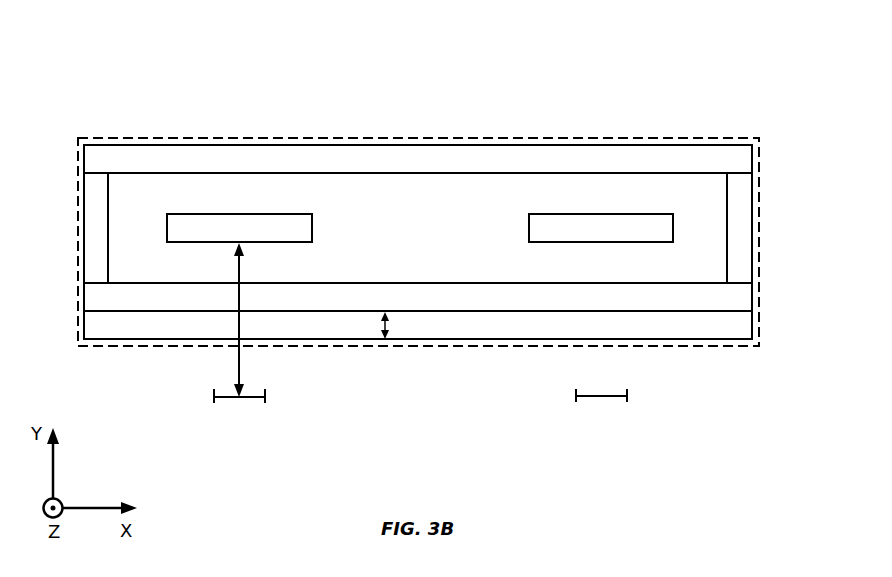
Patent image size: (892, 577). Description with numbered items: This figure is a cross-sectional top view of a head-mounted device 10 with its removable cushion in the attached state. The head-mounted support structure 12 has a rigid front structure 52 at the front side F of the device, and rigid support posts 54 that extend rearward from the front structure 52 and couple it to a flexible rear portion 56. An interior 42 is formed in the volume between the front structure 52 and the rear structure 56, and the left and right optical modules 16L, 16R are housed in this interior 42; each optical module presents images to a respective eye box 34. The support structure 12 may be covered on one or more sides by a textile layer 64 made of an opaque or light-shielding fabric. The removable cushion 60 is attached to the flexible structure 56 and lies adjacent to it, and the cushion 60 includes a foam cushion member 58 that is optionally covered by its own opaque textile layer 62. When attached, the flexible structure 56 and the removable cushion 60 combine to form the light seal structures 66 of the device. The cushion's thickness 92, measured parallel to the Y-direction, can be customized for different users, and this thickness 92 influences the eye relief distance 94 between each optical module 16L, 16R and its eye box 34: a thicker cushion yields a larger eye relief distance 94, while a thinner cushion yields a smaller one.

The head-mounted device 10 is at (97, 58).
The head-mounted support structure 12 is at (783, 228).
The left optical module 16L is at (311, 228).
The right optical module 16R is at (670, 225).
The eye box 34 is at (248, 398).
The interior 42 is at (360, 193).
The rigid front structure 52 is at (260, 156).
The support posts 54 is at (93, 232).
The flexible rear portion 56 is at (442, 295).
The cushion member 58 is at (500, 328).
The removable cushion 60 is at (778, 329).
The textile layer 62 is at (727, 347).
The textile layer 64 is at (733, 138).
The light seal structures 66 is at (66, 281).
The cushion thickness 92 is at (387, 323).
The eye relief distance 94 is at (242, 265).
The front side F is at (491, 118).